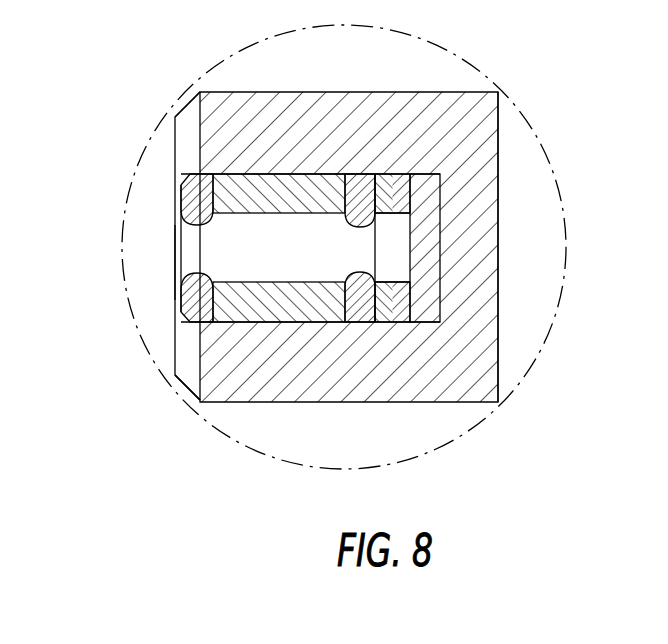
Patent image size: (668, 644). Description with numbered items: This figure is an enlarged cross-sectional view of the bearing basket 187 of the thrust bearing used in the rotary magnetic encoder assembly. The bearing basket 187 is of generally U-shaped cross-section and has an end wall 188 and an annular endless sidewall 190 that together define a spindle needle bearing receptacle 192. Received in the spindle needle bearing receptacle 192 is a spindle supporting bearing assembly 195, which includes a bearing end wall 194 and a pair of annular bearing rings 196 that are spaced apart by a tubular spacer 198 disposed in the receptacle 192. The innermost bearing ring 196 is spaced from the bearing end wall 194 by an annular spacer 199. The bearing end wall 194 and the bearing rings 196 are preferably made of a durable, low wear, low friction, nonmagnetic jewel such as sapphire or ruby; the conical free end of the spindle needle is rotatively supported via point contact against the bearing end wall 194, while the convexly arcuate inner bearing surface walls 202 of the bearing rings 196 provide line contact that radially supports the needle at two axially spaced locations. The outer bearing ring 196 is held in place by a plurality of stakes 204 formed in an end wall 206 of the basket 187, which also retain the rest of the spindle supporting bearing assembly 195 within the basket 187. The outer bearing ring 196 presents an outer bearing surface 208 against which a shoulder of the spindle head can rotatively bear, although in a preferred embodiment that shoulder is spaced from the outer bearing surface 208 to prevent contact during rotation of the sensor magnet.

The bearing basket 187 is at (545, 127).
The end wall 188 is at (470, 242).
The annular endless sidewall 190 is at (357, 113).
The spindle needle bearing receptacle 192 is at (163, 247).
The bearing end wall 194 is at (427, 210).
The spindle supporting bearing assembly 195 is at (163, 298).
The bearing ring 196 is at (210, 170).
The tubular spacer 198 is at (290, 173).
The annular spacer 199 is at (383, 323).
The inner bearing surface wall 202 is at (193, 272).
The stake 204 is at (175, 157).
The end wall of the basket 206 is at (175, 360).
The outer bearing surface 208 is at (175, 200).